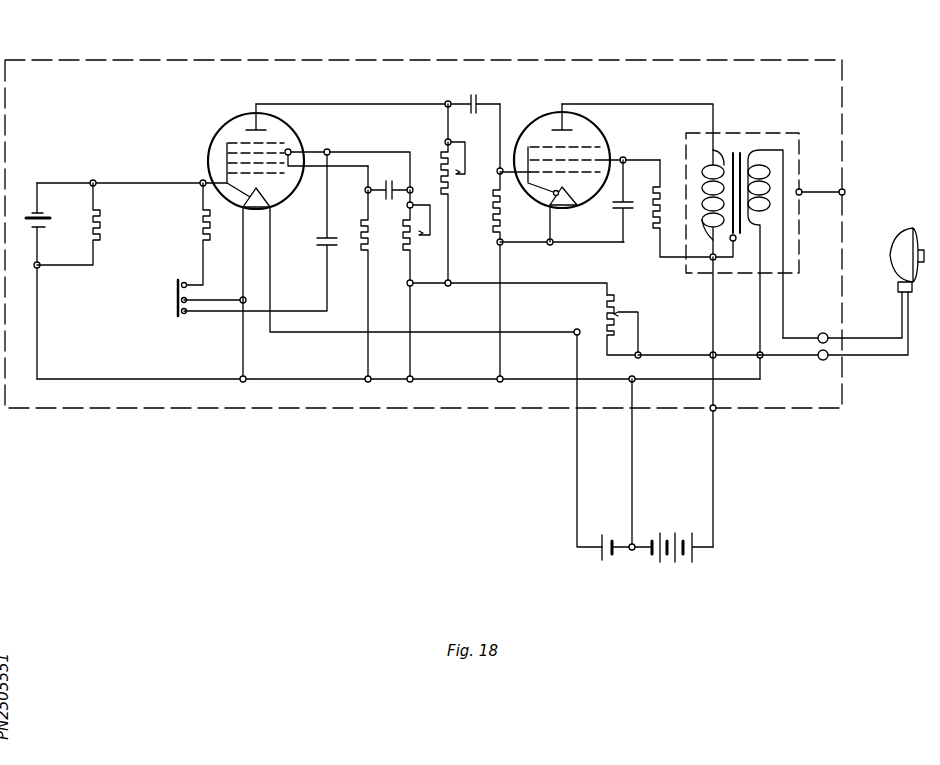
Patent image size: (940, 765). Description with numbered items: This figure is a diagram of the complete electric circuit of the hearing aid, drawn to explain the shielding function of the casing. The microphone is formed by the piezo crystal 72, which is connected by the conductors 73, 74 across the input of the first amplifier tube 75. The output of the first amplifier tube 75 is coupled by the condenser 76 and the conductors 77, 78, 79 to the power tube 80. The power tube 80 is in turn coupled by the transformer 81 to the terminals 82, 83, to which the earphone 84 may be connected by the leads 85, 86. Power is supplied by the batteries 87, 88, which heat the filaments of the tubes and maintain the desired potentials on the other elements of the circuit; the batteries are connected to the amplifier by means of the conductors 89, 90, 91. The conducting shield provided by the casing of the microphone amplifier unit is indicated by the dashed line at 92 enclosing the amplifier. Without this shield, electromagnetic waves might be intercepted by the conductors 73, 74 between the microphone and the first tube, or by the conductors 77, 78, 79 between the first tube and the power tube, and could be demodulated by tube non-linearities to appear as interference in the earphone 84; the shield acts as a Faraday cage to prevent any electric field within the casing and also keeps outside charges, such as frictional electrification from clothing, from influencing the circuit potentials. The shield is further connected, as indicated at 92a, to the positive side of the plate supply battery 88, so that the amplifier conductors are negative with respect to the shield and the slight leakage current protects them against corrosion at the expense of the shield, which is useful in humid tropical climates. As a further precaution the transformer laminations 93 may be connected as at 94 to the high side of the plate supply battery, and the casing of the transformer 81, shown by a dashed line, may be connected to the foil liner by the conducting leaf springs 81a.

The piezo crystal 72 is at (28, 220).
The conductor 73 is at (140, 183).
The conductor 74 is at (40, 328).
The first amplifier tube 75 is at (222, 129).
The condenser 76 is at (474, 118).
The conductor 77 is at (387, 106).
The conductor 78 is at (498, 160).
The conductor 79 is at (345, 381).
The power tube 80 is at (601, 134).
The transformer 81 is at (800, 136).
The conducting leaf springs 81a is at (818, 192).
The terminal 82 is at (822, 332).
The terminal 83 is at (821, 361).
The earphone 84 is at (899, 236).
The lead 85 is at (870, 338).
The lead 86 is at (875, 357).
The battery 87 is at (607, 562).
The plate supply battery 88 is at (685, 562).
The conductor 89 is at (577, 516).
The conductor 90 is at (633, 462).
The conductor 91 is at (714, 462).
The conducting shield 92 is at (845, 400).
The shield connection 92a is at (712, 411).
The transformer laminations 93 is at (740, 244).
The lamination connection 94 is at (712, 262).